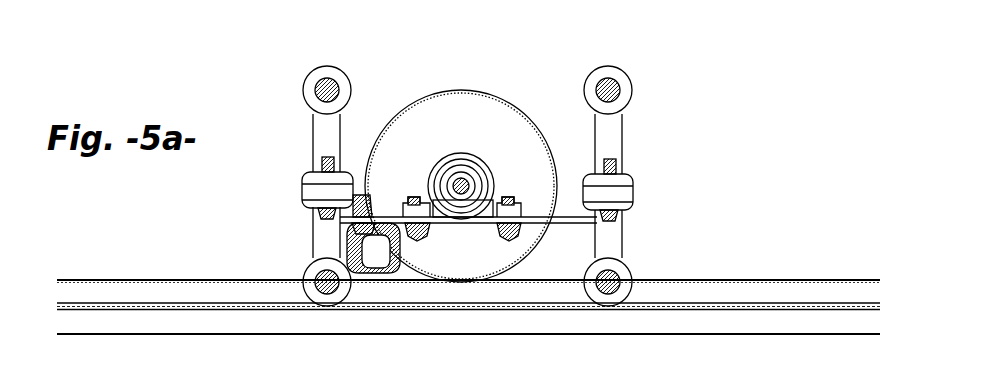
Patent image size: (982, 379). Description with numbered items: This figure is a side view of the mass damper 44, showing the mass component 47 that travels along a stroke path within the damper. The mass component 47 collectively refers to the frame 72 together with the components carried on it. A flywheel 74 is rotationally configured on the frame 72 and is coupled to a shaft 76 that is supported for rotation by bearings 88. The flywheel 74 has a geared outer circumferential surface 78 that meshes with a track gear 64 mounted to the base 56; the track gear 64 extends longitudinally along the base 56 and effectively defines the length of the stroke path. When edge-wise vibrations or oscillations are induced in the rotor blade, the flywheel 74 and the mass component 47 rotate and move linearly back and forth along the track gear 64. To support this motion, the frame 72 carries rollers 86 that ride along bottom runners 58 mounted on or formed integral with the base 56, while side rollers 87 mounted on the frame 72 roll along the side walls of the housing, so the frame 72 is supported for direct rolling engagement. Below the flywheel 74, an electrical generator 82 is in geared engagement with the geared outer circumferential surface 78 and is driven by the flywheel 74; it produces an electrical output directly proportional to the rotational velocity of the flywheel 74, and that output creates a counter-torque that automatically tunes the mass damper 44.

The mass damper 44 is at (745, 104).
The mass component 47 is at (288, 197).
The base 56 is at (162, 324).
The bottom runners 58 is at (520, 310).
The track gear 64 is at (244, 280).
The frame 72 is at (623, 146).
The flywheel 74 is at (476, 139).
The shaft 76 is at (462, 188).
The geared outer circumferential surface 78 is at (430, 97).
The electrical generator 82 is at (388, 247).
The rollers 86 is at (325, 92).
The side rollers 87 is at (634, 195).
The bearings 88 is at (445, 168).